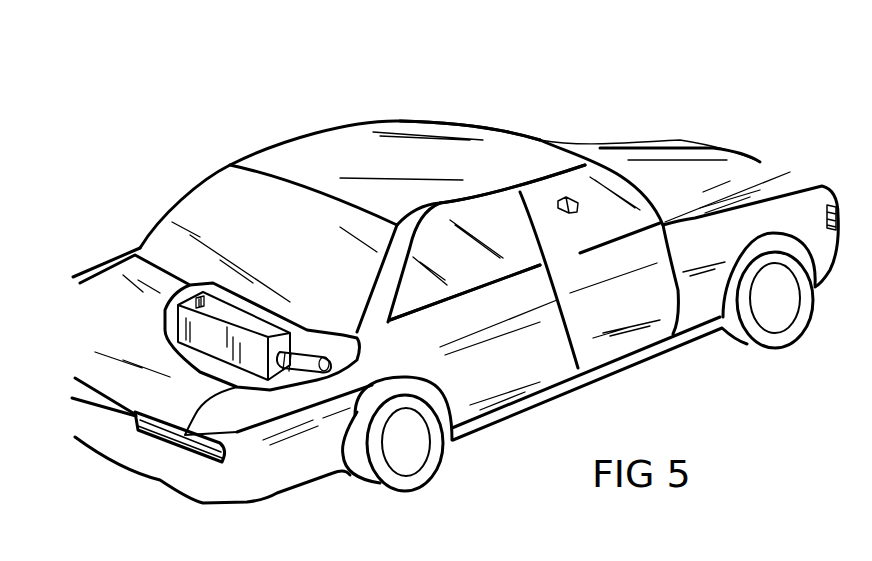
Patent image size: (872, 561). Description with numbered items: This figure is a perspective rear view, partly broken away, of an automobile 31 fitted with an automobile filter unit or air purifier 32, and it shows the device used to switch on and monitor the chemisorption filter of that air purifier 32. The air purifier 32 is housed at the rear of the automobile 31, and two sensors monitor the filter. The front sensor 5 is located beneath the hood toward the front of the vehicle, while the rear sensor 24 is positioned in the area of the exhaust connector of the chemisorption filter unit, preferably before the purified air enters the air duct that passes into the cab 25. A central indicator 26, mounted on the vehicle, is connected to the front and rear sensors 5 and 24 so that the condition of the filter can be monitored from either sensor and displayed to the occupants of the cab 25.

The front sensor 5 is at (748, 161).
The rear sensor 24 is at (290, 372).
The cab 25 is at (495, 230).
The central indicator 26 is at (568, 198).
The automobile 31 is at (383, 150).
The air purifier 32 is at (245, 322).